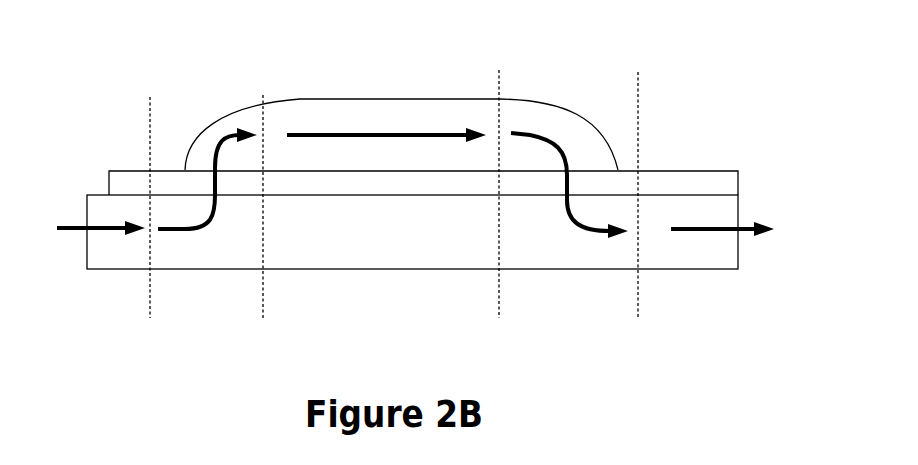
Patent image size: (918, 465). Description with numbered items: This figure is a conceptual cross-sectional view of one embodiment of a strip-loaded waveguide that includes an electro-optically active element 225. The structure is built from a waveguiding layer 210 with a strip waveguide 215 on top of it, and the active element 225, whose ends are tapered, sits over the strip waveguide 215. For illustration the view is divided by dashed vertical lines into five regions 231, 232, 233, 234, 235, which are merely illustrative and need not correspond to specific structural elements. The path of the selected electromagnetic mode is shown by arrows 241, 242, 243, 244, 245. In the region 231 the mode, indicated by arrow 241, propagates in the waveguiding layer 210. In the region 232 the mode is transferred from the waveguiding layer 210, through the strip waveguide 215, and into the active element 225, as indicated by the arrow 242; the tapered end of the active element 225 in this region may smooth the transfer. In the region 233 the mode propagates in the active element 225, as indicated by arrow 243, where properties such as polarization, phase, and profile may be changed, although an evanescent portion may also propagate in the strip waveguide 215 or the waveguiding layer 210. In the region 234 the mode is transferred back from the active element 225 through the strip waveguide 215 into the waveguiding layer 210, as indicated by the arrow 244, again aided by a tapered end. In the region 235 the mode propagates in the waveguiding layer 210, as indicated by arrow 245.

The waveguiding layer 210 is at (386, 251).
The strip waveguide 215 is at (740, 181).
The active element 225 is at (290, 102).
The region 231 is at (101, 70).
The region 232 is at (206, 70).
The region 233 is at (388, 38).
The region 234 is at (573, 53).
The region 235 is at (692, 70).
The arrow 241 is at (79, 232).
The arrow 242 is at (174, 233).
The arrow 243 is at (313, 137).
The arrow 244 is at (582, 228).
The arrow 245 is at (715, 231).